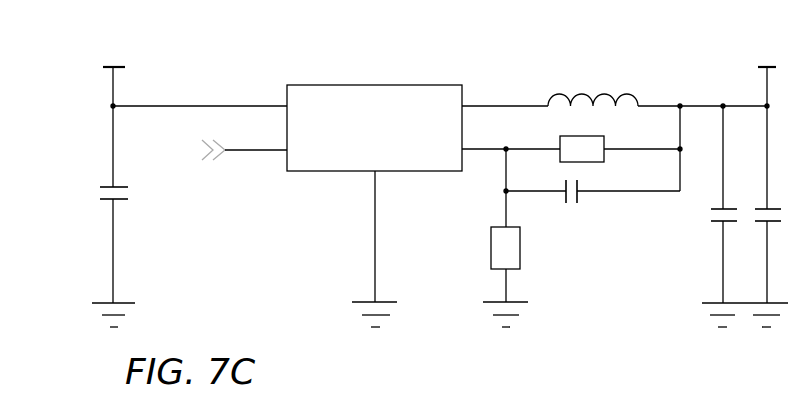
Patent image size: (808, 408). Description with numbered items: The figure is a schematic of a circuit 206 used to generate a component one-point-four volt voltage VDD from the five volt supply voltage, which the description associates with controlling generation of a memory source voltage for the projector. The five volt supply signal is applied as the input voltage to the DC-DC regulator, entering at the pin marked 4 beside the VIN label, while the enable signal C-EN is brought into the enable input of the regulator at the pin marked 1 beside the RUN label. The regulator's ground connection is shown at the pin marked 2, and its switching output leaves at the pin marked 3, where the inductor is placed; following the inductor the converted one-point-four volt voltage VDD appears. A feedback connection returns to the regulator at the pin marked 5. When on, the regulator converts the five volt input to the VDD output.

The circuit 206 is at (593, 277).
The RUN pin of U4 1 is at (244, 147).
The GND pin of U4 2 is at (368, 236).
The SW pin of U4 3 is at (505, 99).
The VIN pin of U4 4 is at (200, 99).
The VFB pin of U4 5 is at (511, 143).